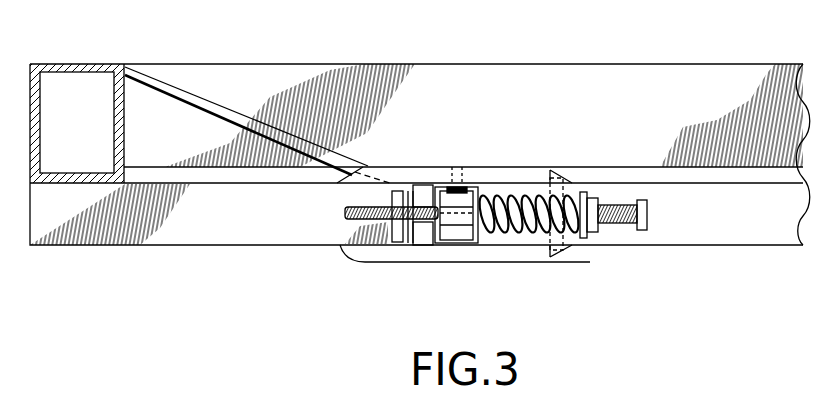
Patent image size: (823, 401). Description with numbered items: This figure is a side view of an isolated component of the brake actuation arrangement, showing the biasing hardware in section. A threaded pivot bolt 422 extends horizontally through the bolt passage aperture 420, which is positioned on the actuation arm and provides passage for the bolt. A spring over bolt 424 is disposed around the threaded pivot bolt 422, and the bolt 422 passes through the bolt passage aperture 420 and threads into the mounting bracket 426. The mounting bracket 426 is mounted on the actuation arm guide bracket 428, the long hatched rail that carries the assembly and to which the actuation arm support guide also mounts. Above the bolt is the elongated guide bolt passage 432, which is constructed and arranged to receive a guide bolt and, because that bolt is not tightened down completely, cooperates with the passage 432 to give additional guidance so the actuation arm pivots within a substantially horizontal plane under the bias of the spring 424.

The bolt passage aperture 420 is at (478, 226).
The threaded pivot bolt 422 is at (613, 226).
The spring over bolt 424 is at (524, 230).
The mounting bracket 426 is at (395, 228).
The actuation arm guide bracket 428 is at (153, 233).
The elongated guide bolt passage 432 is at (460, 188).